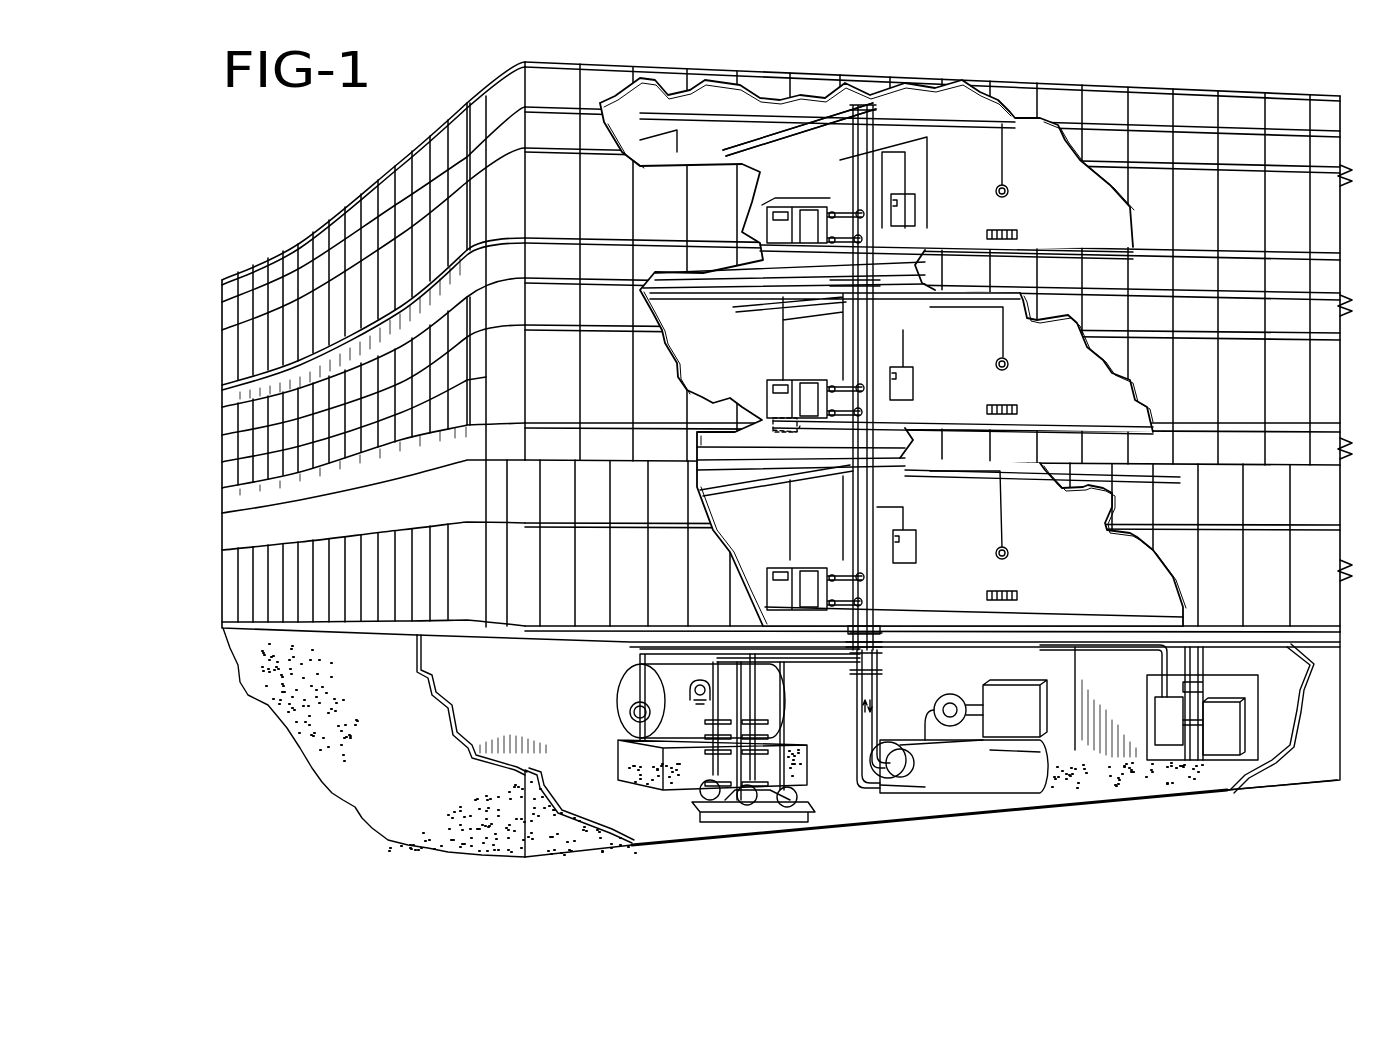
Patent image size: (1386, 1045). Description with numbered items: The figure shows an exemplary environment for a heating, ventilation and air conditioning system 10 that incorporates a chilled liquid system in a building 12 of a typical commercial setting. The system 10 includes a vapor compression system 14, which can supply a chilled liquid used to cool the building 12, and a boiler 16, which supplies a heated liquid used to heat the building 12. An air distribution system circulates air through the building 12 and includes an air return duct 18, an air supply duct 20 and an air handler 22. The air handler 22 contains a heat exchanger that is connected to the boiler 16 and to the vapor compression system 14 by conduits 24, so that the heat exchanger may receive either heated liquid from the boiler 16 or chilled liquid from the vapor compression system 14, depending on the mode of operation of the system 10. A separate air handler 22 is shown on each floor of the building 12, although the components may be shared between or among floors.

The heating, ventilation and air conditioning system 10 is at (1090, 818).
The building 12 is at (1200, 93).
The vapor compression system 14 is at (992, 768).
The boiler 16 is at (622, 692).
The air return duct 18 is at (773, 430).
The air supply duct 20 is at (853, 118).
The air handler 22 is at (812, 388).
The conduits 24 is at (858, 624).